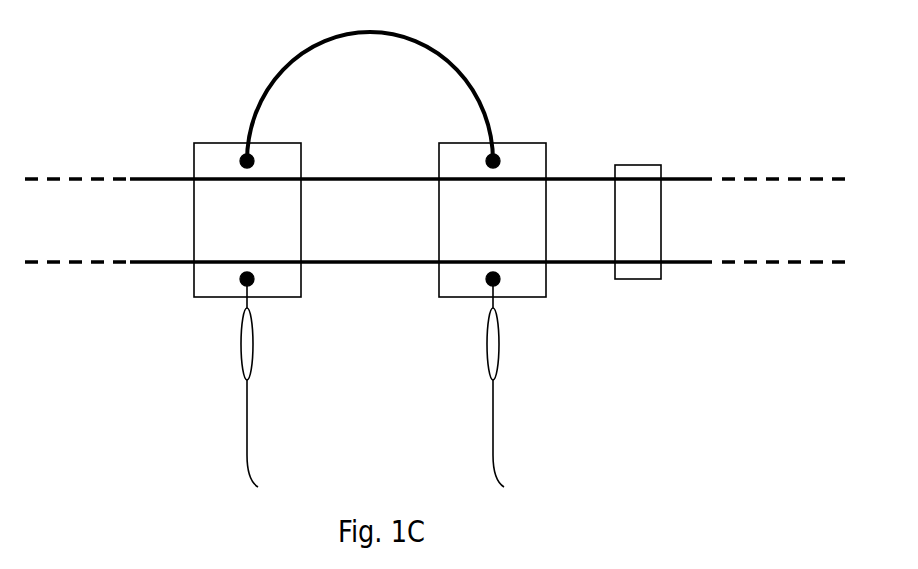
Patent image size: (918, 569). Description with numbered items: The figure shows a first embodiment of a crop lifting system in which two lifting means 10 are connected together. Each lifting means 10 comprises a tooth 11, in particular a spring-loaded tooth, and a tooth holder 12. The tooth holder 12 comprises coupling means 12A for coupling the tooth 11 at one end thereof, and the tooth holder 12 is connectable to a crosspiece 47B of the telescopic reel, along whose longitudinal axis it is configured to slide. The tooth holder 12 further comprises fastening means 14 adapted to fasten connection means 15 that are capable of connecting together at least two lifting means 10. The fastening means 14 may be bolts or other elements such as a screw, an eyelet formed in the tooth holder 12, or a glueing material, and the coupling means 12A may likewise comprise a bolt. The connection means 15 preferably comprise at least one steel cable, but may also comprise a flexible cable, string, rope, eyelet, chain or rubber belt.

The lifting means 10 is at (224, 364).
The tooth 11 is at (253, 345).
The tooth holder 12 is at (207, 143).
The coupling means 12A is at (254, 279).
The fastening means 14 is at (243, 152).
The connection means 15 is at (455, 65).
The crosspiece 47B is at (637, 165).